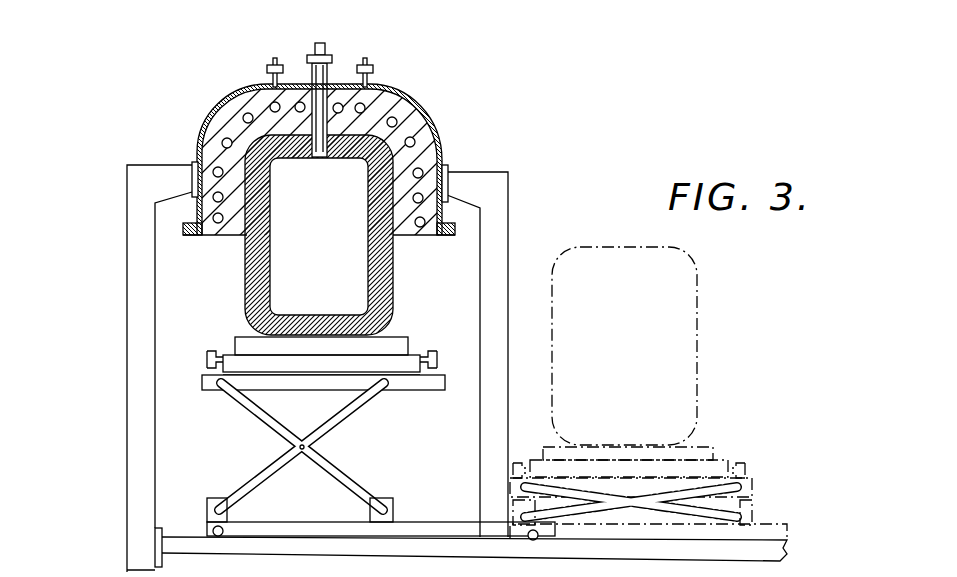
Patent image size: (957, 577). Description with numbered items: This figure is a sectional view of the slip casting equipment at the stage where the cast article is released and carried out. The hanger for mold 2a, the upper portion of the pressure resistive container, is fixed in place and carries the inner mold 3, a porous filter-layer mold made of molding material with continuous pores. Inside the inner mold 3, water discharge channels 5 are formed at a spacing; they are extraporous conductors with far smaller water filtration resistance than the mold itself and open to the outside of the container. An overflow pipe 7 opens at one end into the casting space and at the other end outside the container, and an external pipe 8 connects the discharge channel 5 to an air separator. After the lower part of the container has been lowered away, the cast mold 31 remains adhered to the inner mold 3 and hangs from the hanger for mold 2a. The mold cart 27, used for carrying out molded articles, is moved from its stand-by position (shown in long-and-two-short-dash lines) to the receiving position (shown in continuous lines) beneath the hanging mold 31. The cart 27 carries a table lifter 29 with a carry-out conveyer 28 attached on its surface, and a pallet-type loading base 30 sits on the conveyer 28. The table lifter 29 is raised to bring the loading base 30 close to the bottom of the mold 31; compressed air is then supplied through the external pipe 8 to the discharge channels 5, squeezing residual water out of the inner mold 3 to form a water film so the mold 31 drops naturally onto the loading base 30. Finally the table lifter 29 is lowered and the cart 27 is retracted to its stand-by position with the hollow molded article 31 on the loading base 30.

The hanger for mold 2a is at (432, 126).
The inner mold 3 is at (403, 162).
The water discharge channel 5 is at (416, 222).
The overflow pipe 7 is at (320, 160).
The external pipe 8 is at (266, 80).
The cart 27 is at (433, 527).
The carry-out conveyer 28 is at (410, 360).
The table lifter 29 is at (422, 388).
The loading base 30 is at (396, 336).
The mold 31 is at (257, 278).